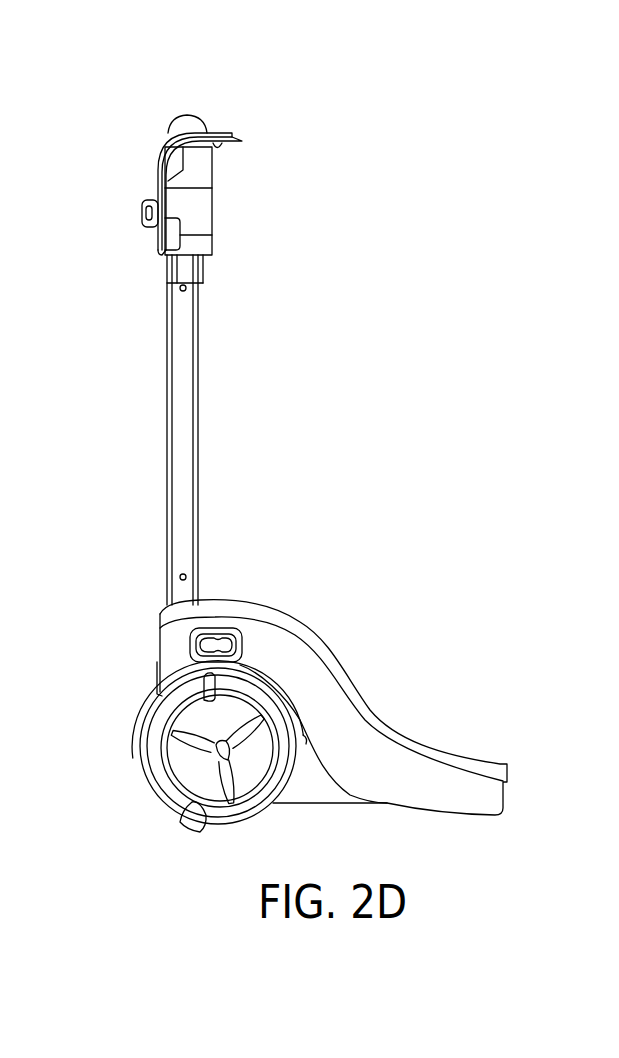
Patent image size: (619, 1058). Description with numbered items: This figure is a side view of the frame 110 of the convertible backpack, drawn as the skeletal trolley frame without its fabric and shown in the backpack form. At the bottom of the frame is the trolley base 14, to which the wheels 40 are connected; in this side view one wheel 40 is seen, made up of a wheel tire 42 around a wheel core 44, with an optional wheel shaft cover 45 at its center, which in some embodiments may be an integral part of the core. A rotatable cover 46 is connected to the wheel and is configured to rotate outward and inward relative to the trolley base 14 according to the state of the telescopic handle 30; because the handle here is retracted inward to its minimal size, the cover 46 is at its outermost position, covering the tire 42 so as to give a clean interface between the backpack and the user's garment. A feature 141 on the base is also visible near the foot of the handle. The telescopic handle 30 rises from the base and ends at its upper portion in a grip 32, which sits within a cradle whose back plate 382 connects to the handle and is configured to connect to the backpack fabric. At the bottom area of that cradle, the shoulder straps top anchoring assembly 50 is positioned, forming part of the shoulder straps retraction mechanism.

The grip 32 is at (186, 131).
The shoulder straps top anchoring assembly 50 is at (142, 214).
The back plate 382 is at (212, 210).
The telescopic handle 30 is at (190, 440).
The frame 110 is at (411, 418).
The receiving socket 141 is at (195, 648).
The trolley base 14 is at (368, 705).
The wheel shaft cover 45 is at (197, 750).
The rotatable cover 46 is at (148, 775).
The wheel 40 is at (133, 808).
The wheel core 44 is at (200, 790).
The wheel tire 42 is at (260, 812).